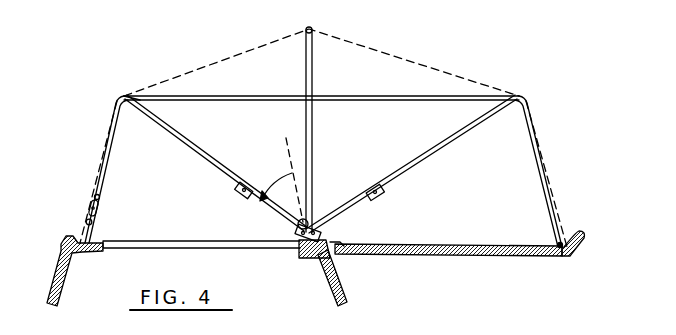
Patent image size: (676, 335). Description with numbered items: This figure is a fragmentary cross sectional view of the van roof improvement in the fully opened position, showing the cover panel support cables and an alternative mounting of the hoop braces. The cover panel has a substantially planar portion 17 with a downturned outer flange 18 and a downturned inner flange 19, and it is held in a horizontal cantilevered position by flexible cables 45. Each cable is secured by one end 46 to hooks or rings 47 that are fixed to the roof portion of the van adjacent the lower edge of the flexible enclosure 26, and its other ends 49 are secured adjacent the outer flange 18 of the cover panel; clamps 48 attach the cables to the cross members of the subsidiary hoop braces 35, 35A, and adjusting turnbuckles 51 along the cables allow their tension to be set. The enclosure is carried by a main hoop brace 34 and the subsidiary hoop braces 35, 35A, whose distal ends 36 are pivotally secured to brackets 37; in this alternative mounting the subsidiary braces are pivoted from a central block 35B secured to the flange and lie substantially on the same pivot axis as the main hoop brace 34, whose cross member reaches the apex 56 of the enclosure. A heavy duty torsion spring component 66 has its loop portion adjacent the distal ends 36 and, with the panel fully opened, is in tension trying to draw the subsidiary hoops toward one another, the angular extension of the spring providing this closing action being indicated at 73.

The flexible enclosure 26 is at (236, 38).
The apex 56 is at (311, 30).
The flexible cables 45 is at (108, 164).
The clamps 48 is at (140, 102).
The subsidiary hoop brace 35 is at (203, 160).
The subsidiary hoop brace 35A is at (438, 152).
The main hoop brace 34 is at (322, 140).
The angular extension of the spring 73 is at (278, 178).
The distal ends 36 is at (370, 192).
The torsion spring component 66 is at (310, 221).
The inner flange 19 is at (338, 243).
The central block 35B is at (304, 250).
The brackets 37 is at (333, 252).
The planar portion 17 is at (456, 257).
The outer flange 18 is at (583, 238).
The other ends of the cables 49 is at (558, 244).
The hooks or rings 47 is at (80, 243).
The adjusting turnbuckles 51 is at (99, 207).
The one end of the cable 46 is at (93, 225).